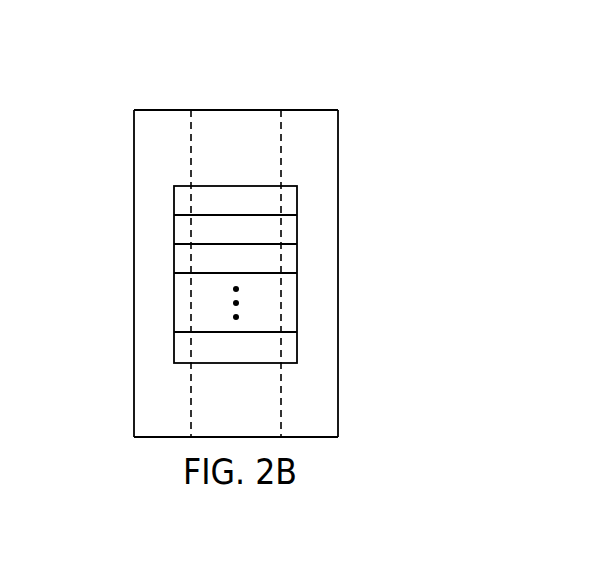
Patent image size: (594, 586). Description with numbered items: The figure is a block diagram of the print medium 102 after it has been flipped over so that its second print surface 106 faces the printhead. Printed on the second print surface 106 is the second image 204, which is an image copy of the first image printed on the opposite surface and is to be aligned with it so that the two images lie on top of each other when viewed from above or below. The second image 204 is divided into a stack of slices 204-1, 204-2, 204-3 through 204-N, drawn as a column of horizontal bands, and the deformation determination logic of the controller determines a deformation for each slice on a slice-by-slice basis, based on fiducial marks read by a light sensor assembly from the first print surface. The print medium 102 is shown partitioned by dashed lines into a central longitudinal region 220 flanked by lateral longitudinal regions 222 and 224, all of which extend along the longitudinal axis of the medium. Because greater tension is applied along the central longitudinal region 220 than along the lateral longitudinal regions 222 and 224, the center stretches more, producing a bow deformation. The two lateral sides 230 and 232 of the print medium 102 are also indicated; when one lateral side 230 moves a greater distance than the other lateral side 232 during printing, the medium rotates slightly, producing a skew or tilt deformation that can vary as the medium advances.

The print medium 102 is at (133, 401).
The second print surface 106 is at (153, 417).
The central longitudinal region 220 is at (281, 73).
The lateral longitudinal region 222 is at (191, 95).
The lateral longitudinal region 224 is at (338, 95).
The lateral side 230 is at (134, 132).
The lateral side 232 is at (338, 132).
The second image 204 is at (287, 363).
The slice of the second image 204-1 is at (289, 203).
The slice of the second image 204-2 is at (289, 233).
The slice of the second image 204-3 is at (289, 262).
The slice of the second image 204-N is at (289, 352).